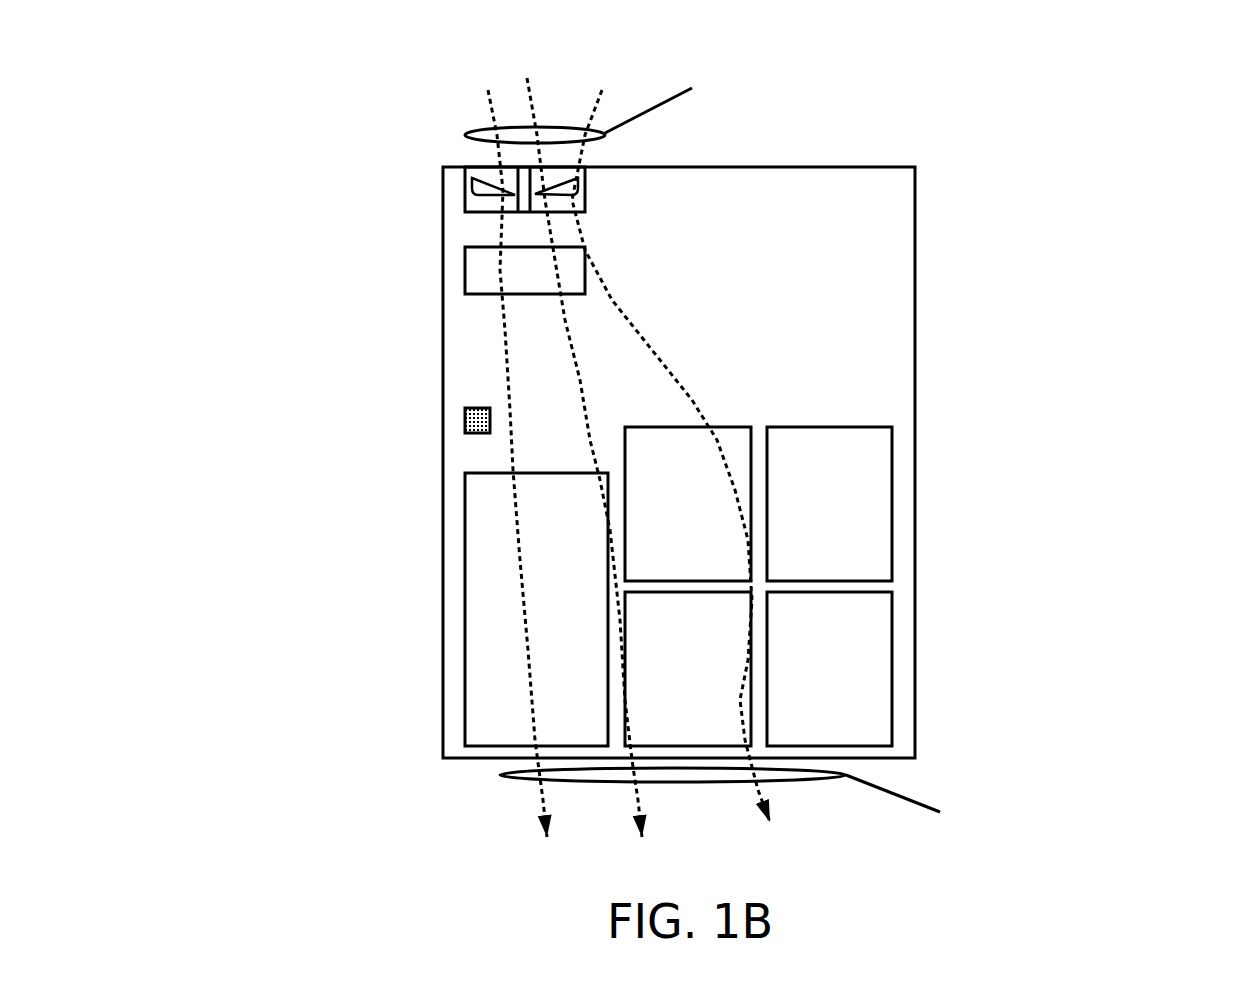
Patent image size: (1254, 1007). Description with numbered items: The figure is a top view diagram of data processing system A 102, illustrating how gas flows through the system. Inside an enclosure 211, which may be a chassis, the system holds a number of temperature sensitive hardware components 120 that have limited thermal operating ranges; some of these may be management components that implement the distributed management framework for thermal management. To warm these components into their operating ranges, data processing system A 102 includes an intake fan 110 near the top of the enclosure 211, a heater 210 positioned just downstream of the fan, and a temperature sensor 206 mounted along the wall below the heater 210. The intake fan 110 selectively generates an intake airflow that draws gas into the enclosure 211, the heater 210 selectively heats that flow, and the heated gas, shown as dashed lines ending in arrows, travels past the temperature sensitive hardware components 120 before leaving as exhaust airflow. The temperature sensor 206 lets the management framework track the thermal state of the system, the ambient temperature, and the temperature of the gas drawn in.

The data processing system A 102 is at (180, 198).
The intake fan 110 is at (460, 155).
The enclosure 211 is at (917, 227).
The heater 210 is at (462, 284).
The temperature sensor 206 is at (460, 422).
The temperature sensitive hardware components 120 is at (1053, 419).